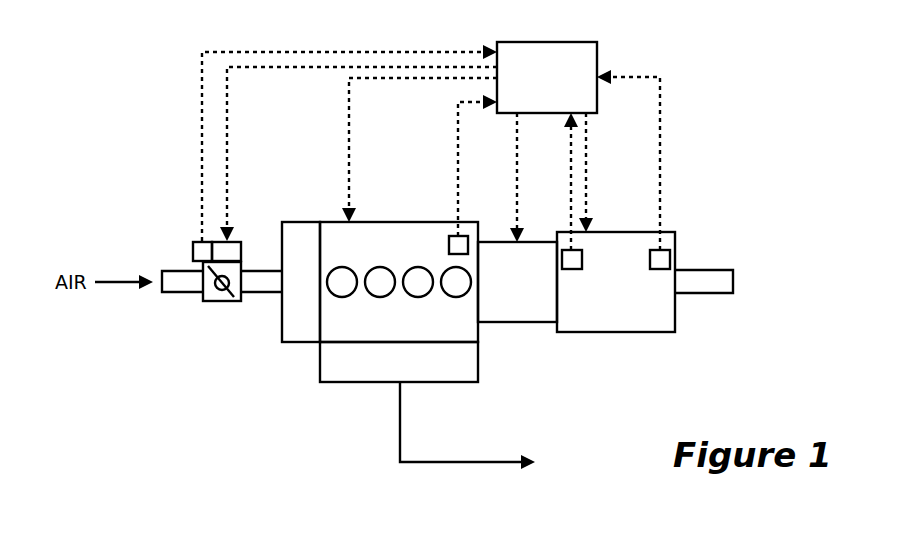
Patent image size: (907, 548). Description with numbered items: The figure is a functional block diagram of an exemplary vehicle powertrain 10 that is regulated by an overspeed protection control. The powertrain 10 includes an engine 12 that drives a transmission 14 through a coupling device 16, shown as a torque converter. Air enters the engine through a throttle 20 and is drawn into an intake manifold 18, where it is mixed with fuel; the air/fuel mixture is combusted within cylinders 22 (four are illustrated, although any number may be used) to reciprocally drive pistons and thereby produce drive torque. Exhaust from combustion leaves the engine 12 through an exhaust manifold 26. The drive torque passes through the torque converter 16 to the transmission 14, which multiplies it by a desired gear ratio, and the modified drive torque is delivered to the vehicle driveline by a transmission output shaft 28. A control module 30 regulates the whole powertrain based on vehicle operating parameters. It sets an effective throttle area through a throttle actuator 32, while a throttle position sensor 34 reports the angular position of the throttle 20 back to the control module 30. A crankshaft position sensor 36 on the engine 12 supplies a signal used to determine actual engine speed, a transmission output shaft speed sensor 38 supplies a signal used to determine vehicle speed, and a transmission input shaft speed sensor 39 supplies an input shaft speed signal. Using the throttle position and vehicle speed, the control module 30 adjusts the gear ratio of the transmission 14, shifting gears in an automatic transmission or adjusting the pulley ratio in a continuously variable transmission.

The powertrain 10 is at (778, 115).
The engine 12 is at (377, 237).
The transmission 14 is at (648, 332).
The coupling device 16 is at (497, 322).
The intake manifold 18 is at (302, 342).
The throttle 20 is at (222, 301).
The cylinders 22 is at (386, 296).
The exhaust manifold 26 is at (432, 382).
The transmission output shaft 28 is at (722, 270).
The control module 30 is at (555, 42).
The throttle actuator 32 is at (238, 242).
The throttle position sensor 34 is at (197, 242).
The crankshaft position sensor 36 is at (452, 236).
The transmission output shaft speed sensor 38 is at (664, 246).
The transmission input shaft speed sensor 39 is at (566, 250).